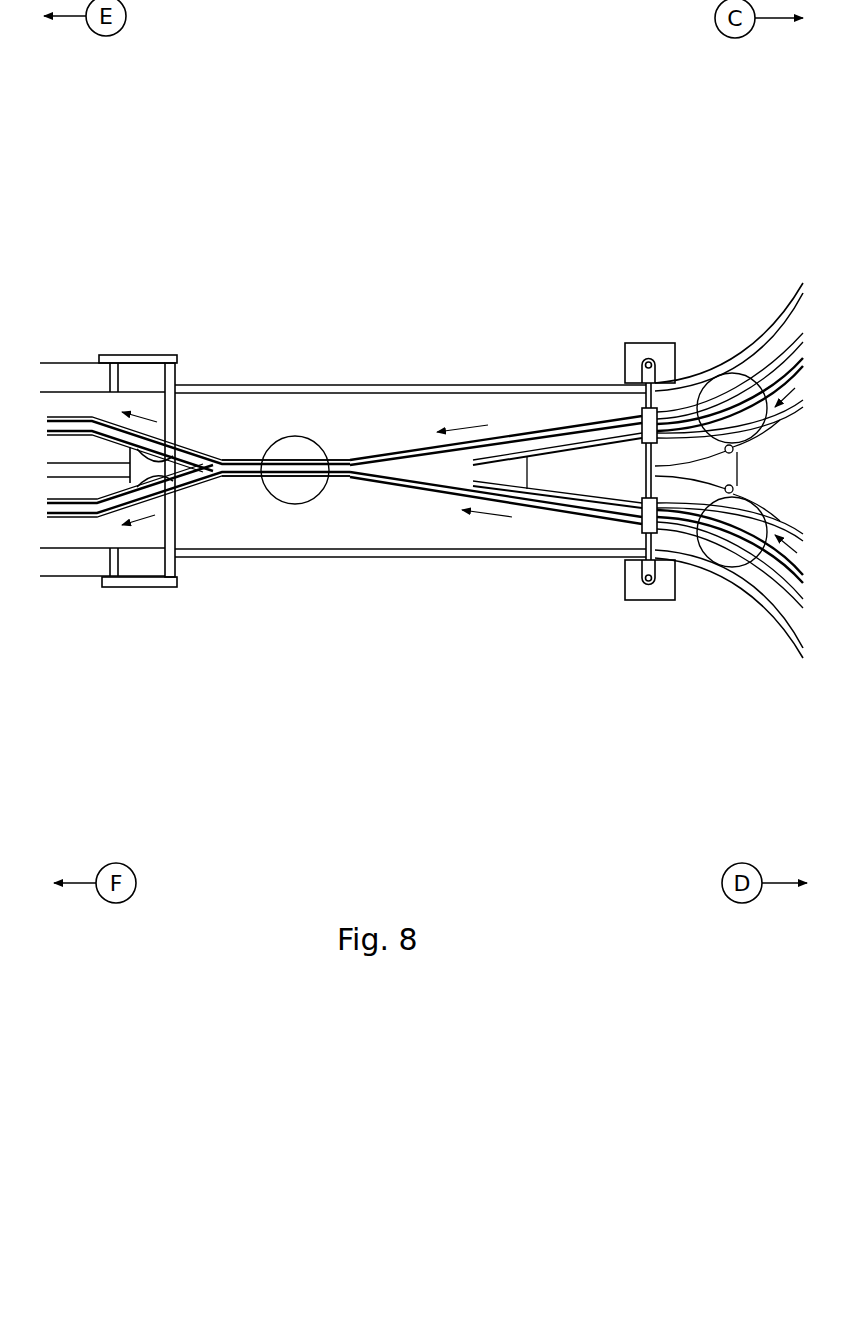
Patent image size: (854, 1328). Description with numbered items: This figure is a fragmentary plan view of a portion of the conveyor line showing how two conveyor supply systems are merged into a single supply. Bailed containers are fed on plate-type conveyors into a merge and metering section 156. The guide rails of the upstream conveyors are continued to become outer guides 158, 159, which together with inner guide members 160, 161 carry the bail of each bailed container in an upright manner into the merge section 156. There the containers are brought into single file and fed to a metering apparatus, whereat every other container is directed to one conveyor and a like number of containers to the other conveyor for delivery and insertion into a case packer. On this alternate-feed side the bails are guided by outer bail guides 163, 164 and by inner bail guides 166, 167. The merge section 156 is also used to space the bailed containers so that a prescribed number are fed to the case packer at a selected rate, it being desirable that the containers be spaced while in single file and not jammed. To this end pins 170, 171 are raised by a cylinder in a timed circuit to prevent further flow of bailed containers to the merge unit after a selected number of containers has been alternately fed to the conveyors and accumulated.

The merge and metering section 156 is at (402, 385).
The outer guide 158 is at (525, 432).
The outer guide 159 is at (546, 509).
The inner guide member 160 is at (548, 451).
The inner guide member 161 is at (594, 499).
The outer bail guide 163 is at (229, 458).
The outer bail guide 164 is at (230, 479).
The inner bail guide 166 is at (176, 451).
The inner bail guide 167 is at (188, 481).
The pin 170 is at (737, 455).
The pin 171 is at (763, 493).